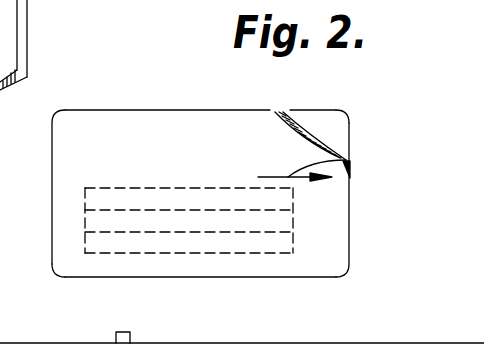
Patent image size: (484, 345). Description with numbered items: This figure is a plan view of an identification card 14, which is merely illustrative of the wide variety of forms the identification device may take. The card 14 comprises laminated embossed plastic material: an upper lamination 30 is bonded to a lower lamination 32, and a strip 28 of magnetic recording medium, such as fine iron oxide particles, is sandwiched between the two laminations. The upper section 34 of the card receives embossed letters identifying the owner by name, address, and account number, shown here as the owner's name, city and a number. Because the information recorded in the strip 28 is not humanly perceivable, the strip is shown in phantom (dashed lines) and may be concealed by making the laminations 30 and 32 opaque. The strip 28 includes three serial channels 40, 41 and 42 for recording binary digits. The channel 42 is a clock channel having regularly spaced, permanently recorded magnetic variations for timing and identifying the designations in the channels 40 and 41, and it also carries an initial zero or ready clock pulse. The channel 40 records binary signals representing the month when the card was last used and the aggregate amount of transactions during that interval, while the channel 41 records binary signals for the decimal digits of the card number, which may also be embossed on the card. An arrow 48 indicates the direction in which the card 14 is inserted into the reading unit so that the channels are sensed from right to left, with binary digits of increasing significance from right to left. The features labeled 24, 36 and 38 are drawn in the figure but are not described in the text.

The card 14 is at (352, 242).
The card holder / frame member 24 is at (12, 38).
The strip of magnetic recording medium 28 is at (316, 201).
The upper lamination 30 is at (283, 110).
The lower lamination 32 is at (345, 111).
The upper section 34 is at (175, 110).
The bottom left corner of card 36 is at (61, 276).
The bottom edge of card 38 is at (316, 278).
The channel 40 is at (85, 222).
The channel 41 is at (193, 191).
The clock channel 42 is at (85, 248).
The arrow 48 is at (346, 159).